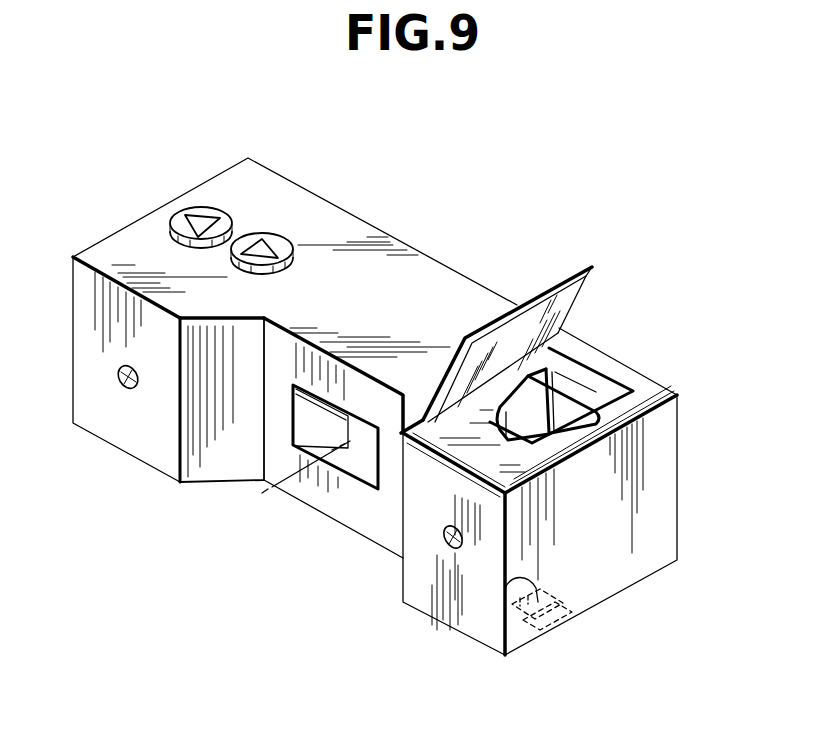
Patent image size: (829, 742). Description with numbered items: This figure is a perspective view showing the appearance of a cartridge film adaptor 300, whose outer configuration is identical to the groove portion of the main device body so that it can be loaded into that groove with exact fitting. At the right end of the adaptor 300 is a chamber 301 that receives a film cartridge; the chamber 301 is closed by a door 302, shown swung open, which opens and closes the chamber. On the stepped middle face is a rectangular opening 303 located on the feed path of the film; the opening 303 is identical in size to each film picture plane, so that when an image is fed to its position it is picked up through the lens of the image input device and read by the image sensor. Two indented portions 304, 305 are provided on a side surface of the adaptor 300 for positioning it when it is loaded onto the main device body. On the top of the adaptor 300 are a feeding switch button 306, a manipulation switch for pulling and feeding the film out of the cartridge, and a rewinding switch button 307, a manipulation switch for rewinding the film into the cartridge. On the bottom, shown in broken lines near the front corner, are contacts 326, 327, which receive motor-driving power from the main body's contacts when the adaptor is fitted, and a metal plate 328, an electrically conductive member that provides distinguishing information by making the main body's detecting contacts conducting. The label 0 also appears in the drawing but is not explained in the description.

The adaptor 300 is at (632, 563).
The chamber 301 is at (577, 400).
The door 302 is at (578, 308).
The rectangular opening 303 is at (347, 460).
The indented portion 304 is at (117, 387).
The indented portion 305 is at (447, 545).
The feeding switch button 306 is at (224, 214).
The rewinding switch button 307 is at (284, 243).
The contact 326 is at (508, 586).
The contact 327 is at (510, 587).
The metal plate 328 is at (550, 625).
The axis 0 is at (229, 512).